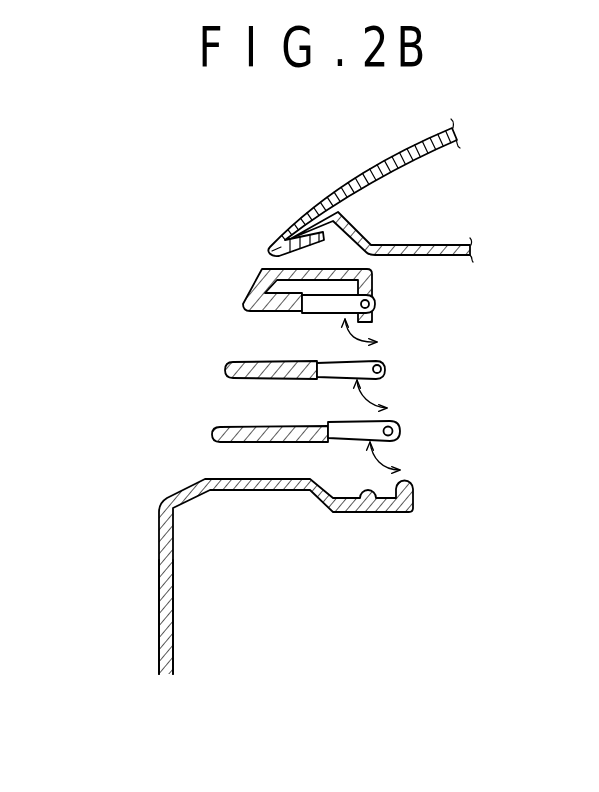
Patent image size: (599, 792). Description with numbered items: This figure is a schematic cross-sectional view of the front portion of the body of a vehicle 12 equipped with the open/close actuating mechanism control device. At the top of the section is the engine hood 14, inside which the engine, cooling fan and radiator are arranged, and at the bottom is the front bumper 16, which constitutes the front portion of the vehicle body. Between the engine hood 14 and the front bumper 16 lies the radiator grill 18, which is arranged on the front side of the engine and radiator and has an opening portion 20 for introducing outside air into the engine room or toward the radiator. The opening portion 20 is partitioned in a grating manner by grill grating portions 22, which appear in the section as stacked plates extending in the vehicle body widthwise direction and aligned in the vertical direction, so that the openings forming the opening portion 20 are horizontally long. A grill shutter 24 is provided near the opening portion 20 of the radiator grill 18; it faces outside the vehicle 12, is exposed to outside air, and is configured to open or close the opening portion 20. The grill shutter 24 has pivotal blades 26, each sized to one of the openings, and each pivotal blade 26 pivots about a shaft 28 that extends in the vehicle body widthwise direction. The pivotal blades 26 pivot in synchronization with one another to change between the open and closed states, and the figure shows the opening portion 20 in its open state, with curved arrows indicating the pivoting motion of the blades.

The vehicle 12 is at (245, 217).
The engine hood 14 is at (363, 168).
The front bumper 16 is at (160, 590).
The radiator grill 18 is at (205, 332).
The opening portion 20 is at (235, 467).
The grill grating portions 22 is at (238, 381).
The grill shutter 24 is at (396, 370).
The pivotal blades 26 is at (347, 443).
The shaft 28 is at (400, 431).